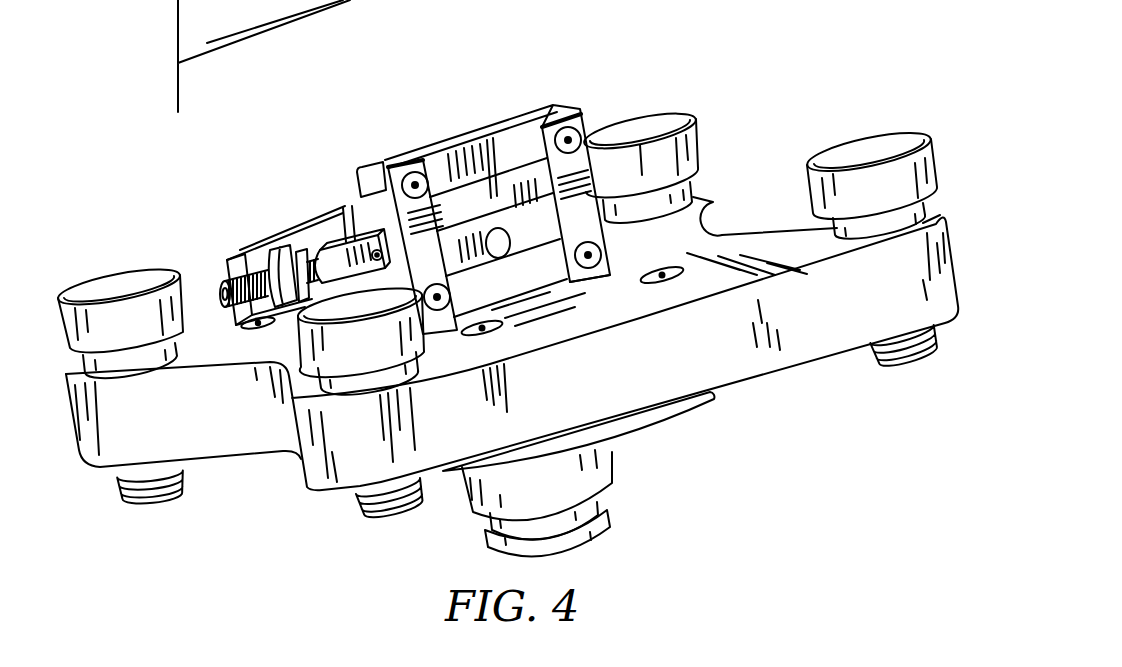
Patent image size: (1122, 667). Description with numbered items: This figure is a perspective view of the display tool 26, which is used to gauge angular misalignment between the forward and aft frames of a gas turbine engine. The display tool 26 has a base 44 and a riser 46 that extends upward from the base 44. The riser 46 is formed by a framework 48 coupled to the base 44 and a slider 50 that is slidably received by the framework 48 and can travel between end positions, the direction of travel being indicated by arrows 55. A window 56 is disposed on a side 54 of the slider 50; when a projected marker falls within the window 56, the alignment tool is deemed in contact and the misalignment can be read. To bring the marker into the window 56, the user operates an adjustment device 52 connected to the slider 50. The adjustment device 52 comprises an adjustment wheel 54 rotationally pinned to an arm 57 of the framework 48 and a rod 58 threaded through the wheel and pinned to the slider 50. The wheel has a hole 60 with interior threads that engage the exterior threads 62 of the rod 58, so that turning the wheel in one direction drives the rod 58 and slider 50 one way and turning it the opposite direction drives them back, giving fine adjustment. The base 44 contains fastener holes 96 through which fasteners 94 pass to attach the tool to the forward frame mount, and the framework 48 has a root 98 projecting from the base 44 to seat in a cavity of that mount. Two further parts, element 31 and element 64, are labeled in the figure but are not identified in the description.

The display tool 26 is at (779, 37).
The work surface 31 is at (366, 56).
The base 44 is at (762, 207).
The riser 46 is at (453, 190).
The framework 48 is at (615, 250).
The slider 50 is at (345, 200).
The adjustment device 52 is at (237, 251).
The adjustment wheel 54 is at (508, 196).
The arrows 55 is at (625, 158).
The window 56 is at (514, 259).
The arm 57 is at (225, 259).
The rod 58 is at (335, 286).
The hole 60 is at (237, 272).
The exterior threads 62 is at (237, 327).
The washer 64 is at (288, 278).
The fasteners 94 is at (892, 131).
The fastener holes 96 is at (940, 219).
The root 98 is at (641, 450).